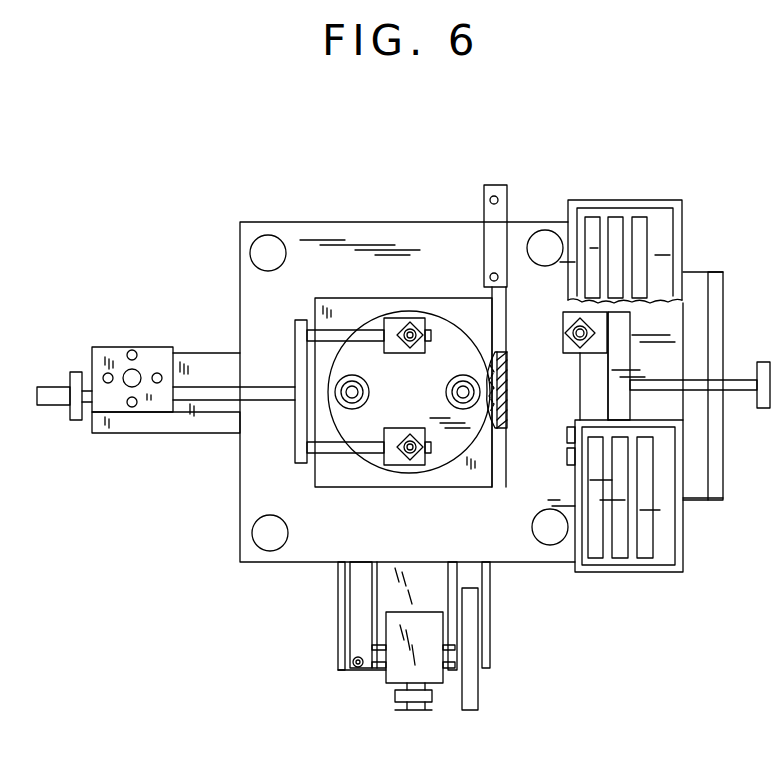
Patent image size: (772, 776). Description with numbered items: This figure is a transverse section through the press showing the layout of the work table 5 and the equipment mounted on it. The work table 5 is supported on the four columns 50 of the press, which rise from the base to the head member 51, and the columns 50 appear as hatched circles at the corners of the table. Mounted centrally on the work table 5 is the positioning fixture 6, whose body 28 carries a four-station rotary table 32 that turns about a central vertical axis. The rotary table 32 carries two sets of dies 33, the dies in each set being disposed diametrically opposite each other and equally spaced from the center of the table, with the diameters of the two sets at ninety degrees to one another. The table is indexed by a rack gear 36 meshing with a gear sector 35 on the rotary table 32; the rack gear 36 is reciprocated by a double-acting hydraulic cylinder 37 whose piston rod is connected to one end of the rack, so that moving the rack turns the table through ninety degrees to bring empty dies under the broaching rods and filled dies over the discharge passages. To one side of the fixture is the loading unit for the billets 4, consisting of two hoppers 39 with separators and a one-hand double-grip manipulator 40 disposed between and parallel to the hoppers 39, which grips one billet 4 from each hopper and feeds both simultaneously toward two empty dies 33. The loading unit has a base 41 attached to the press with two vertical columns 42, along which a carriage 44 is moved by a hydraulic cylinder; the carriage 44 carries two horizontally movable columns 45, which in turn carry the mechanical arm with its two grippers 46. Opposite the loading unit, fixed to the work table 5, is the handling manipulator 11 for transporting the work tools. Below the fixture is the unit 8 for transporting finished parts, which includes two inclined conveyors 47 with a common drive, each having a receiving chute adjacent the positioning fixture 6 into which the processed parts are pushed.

The billets 4 is at (463, 385).
The work table 5 is at (348, 240).
The positioning fixture 6 is at (316, 297).
The unit for the transportation of finished parts 8 is at (400, 672).
The handling manipulator 11 is at (335, 455).
The body 28 is at (357, 330).
The rotary table 32 is at (450, 452).
The dies 33 is at (430, 330).
The gear sector 35 is at (497, 402).
The rack gear 36 is at (500, 357).
The double-acting hydraulic cylinder 37 is at (488, 202).
The hoppers 39 is at (683, 207).
The double-grip manipulator 40 is at (735, 385).
The base 41 is at (130, 420).
The vertical columns 42 is at (108, 373).
The carriage 44 is at (155, 355).
The horizontally movable columns 45 is at (218, 385).
The grippers 46 is at (393, 326).
The inclined conveyors 47 is at (475, 572).
The columns 50 is at (262, 253).
The head member 51 is at (50, 393).